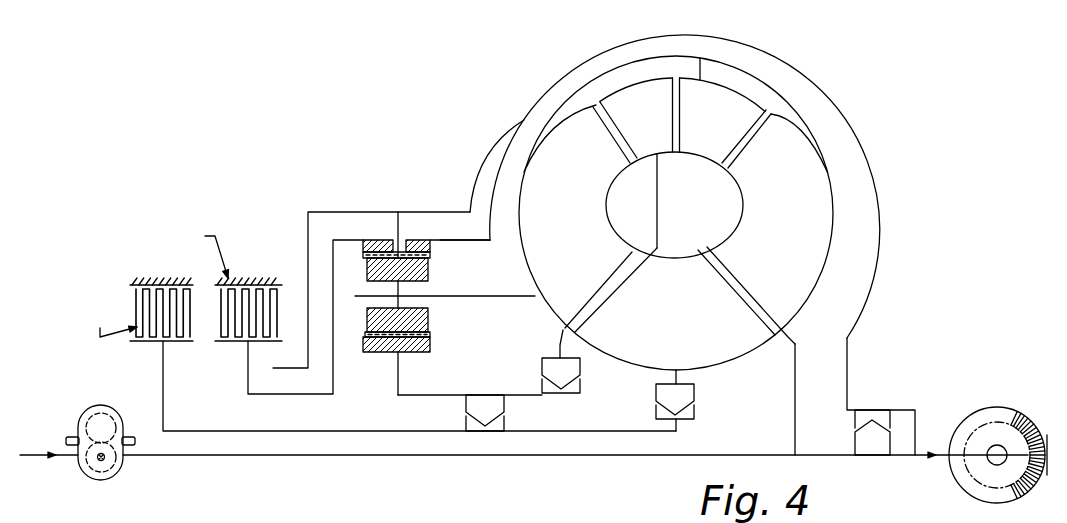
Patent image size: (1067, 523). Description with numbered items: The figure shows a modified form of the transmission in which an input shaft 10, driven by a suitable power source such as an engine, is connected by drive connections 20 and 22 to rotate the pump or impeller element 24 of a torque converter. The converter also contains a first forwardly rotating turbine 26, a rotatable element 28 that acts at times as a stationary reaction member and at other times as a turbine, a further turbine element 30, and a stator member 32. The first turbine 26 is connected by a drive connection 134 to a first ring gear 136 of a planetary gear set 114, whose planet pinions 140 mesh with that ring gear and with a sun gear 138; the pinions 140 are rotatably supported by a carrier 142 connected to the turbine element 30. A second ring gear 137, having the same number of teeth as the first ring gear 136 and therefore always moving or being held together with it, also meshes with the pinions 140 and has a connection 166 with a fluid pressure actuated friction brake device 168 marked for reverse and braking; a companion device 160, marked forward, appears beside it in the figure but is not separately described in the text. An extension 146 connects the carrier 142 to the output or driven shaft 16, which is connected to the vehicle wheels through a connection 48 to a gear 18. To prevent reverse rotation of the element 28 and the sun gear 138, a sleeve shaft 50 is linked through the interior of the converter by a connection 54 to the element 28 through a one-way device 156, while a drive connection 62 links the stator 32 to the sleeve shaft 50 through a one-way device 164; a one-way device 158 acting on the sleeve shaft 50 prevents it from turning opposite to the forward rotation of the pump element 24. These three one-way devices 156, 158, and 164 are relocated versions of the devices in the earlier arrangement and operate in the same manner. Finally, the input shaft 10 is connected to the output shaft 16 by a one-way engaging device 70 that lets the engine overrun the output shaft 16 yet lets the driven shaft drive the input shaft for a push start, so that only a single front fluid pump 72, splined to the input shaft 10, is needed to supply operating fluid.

The input shaft 10 is at (33, 456).
The output or driven shaft 16 is at (483, 153).
The gear 18 is at (1023, 418).
The drive connection 20 is at (558, 455).
The drive connection 22 is at (795, 392).
The pump or impeller element 24 is at (810, 266).
The first turbine 26 is at (745, 110).
The rotatable element 28 is at (660, 140).
The turbine element 30 is at (602, 232).
The stator member 32 is at (678, 268).
The connection 48 is at (943, 450).
The sleeve shaft 50 is at (238, 430).
The connection 54 is at (657, 195).
The drive connection 62 is at (677, 376).
The one-way engaging device 70 is at (853, 446).
The front fluid pump 72 is at (107, 473).
The planetary gear set 114 is at (412, 240).
The drive connection 134 is at (553, 100).
The first ring gear 136 is at (420, 242).
The second ring gear 137 is at (375, 240).
The sun gear 138 is at (430, 342).
The planet pinions 140 is at (421, 278).
The carrier 142 is at (482, 295).
The extension 146 is at (402, 227).
The one-way device 156 is at (580, 368).
The one-way device 158 is at (466, 407).
The forward winding 160 is at (137, 292).
The one-way device 164 is at (697, 390).
The connection 166 is at (333, 358).
The fluid pressure actuated friction brake device 168 is at (277, 295).